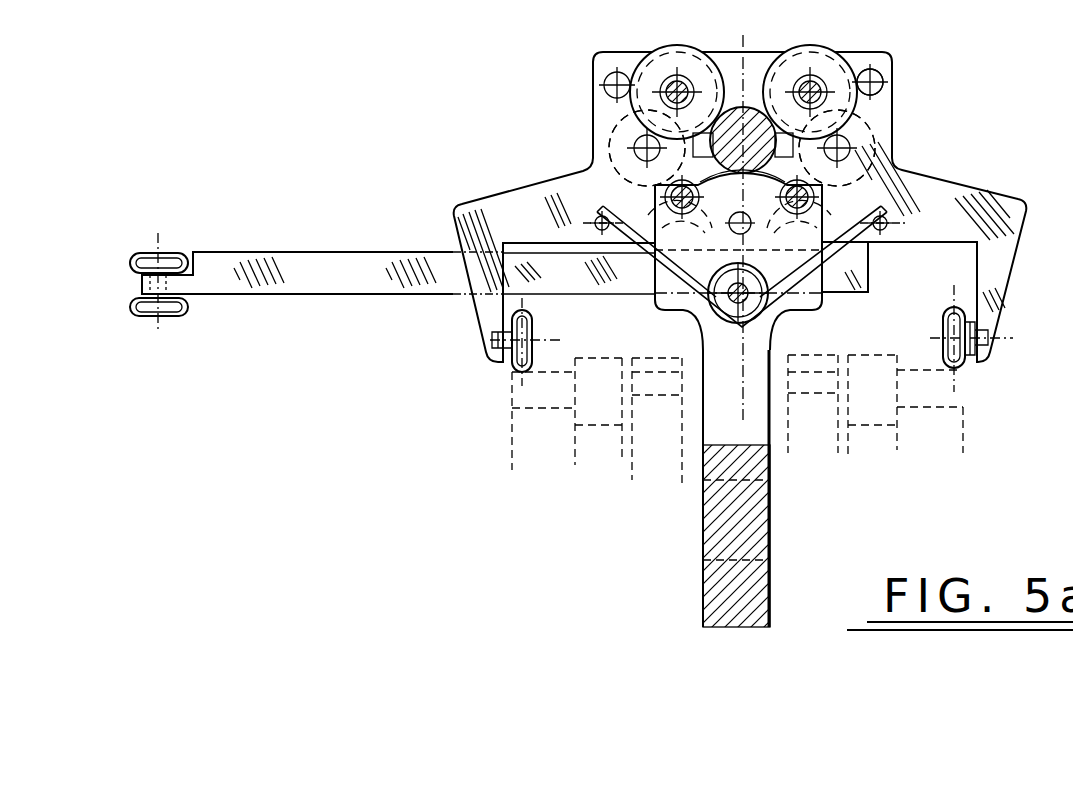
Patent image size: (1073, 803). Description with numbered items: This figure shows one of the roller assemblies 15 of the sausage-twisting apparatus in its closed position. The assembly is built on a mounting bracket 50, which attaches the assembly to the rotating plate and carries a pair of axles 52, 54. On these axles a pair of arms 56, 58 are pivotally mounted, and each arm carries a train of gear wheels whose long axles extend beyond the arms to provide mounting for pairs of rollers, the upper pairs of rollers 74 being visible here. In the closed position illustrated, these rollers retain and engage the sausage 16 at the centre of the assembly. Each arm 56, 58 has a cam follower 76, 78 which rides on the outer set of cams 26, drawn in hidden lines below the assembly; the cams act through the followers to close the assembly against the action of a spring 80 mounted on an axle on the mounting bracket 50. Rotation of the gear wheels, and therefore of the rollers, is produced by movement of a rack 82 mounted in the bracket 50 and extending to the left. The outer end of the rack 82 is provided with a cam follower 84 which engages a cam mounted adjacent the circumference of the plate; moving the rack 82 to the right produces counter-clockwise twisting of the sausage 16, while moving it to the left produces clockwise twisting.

The roller assembly 15 is at (592, 82).
The sausage 16 is at (745, 106).
The outer set of cams 26 is at (548, 432).
The mounting bracket 50 is at (740, 550).
The axle 52 is at (655, 210).
The axle 54 is at (830, 197).
The arm 56 is at (603, 117).
The arm 58 is at (878, 108).
The upper pair of rollers 74 is at (680, 45).
The cam follower 76 is at (515, 363).
The cam follower 78 is at (958, 365).
The spring 80 is at (655, 291).
The rack 82 is at (405, 276).
The cam follower 84 is at (175, 310).